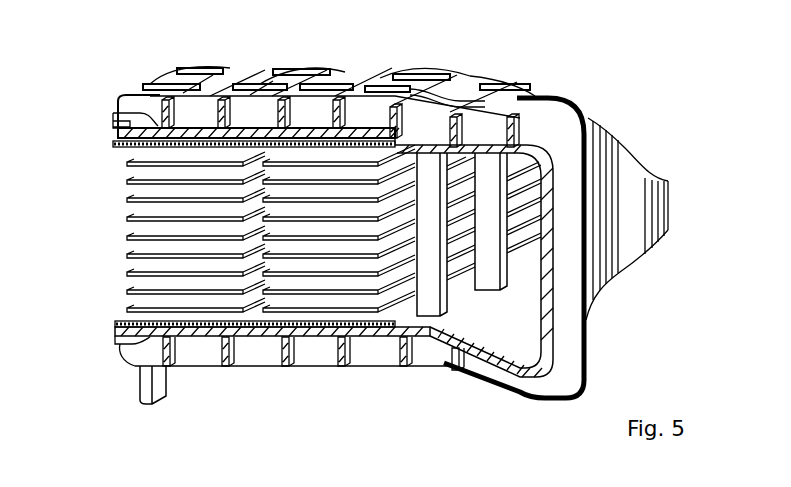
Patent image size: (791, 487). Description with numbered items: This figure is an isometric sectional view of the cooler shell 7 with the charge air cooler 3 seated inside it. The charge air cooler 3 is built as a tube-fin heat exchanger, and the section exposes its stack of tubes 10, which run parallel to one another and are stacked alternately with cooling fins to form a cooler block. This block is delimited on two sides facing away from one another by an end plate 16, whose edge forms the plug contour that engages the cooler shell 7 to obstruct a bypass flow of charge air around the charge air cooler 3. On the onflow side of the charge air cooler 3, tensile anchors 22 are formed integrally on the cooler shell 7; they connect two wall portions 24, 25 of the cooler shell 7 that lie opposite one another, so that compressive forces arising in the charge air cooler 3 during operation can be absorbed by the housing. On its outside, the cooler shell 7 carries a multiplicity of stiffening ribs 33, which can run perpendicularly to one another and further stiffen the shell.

The charge air cooler 3 is at (293, 228).
The cooler shell 7 is at (590, 315).
The tubes 10 is at (127, 305).
The end plate 16 is at (113, 143).
The tensile anchors 22 is at (485, 270).
The wall portion 24 is at (430, 338).
The wall portion 25 is at (478, 148).
The stiffening ribs 33 is at (388, 80).